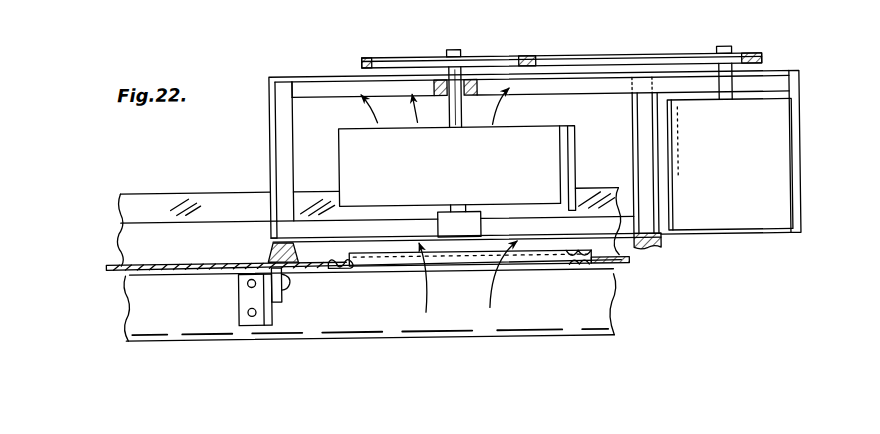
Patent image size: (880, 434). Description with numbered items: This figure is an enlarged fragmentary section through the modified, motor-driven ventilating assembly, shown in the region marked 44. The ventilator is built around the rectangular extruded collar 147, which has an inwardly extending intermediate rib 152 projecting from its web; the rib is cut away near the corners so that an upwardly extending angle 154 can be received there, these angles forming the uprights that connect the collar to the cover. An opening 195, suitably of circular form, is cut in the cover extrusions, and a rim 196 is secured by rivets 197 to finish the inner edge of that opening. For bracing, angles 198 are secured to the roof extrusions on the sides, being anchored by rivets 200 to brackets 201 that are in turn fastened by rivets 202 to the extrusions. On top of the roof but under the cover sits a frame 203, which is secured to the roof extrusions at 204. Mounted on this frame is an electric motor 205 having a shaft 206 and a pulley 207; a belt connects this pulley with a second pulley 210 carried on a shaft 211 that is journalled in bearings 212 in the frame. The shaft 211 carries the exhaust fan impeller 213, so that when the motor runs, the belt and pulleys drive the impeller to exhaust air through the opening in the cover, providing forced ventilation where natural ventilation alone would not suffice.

The frame 44 is at (267, 144).
The collar 147 is at (152, 235).
The intermediate rib 152 is at (125, 280).
The angle 154 is at (284, 117).
The opening 195 is at (348, 268).
The rim 196 is at (583, 268).
The rivets 197 is at (596, 270).
The angles 198 is at (275, 275).
The rivets 200 is at (296, 298).
The brackets 201 is at (246, 298).
The rivets 202 is at (250, 316).
The frame 203 is at (292, 94).
The frame securing point 204 is at (274, 250).
The electric motor 205 is at (712, 162).
The shaft 206 is at (731, 49).
The pulley 207 is at (708, 55).
The pulley 210 is at (480, 56).
The shaft 211 is at (457, 50).
The bearings 212 is at (484, 93).
The exhaust fan impeller 213 is at (457, 170).